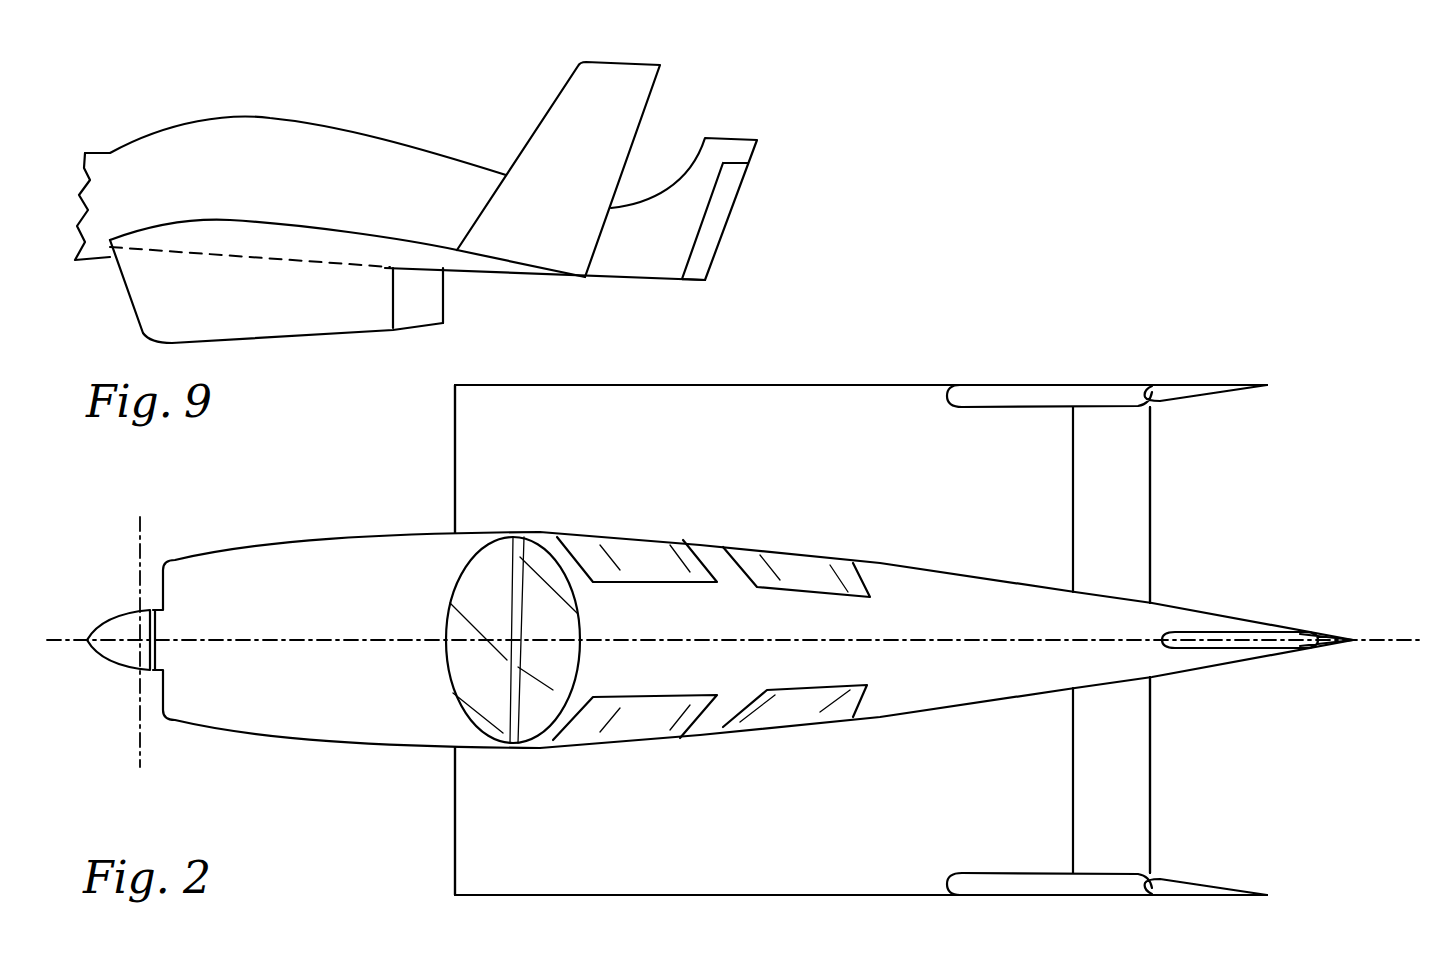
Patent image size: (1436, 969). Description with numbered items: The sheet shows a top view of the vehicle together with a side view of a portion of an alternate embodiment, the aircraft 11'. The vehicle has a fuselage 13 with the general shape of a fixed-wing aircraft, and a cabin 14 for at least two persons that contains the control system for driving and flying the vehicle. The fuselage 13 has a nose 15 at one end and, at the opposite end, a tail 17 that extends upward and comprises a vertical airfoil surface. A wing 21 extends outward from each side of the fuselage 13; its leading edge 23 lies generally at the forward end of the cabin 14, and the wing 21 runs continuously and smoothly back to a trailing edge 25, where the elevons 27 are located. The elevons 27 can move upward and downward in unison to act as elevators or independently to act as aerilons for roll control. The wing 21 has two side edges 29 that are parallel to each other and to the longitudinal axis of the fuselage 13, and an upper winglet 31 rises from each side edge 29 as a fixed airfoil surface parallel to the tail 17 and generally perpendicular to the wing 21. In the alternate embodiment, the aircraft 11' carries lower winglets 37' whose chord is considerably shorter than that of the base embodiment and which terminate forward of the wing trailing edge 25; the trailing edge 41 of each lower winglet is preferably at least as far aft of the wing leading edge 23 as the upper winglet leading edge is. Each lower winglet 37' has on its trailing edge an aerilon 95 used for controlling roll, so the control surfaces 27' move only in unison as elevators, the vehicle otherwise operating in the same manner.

In FIG. 9, the aircraft 11' is at (290, 172).
In FIG. 2, the aircraft 11' is at (1257, 482).
In FIG. 2, the fuselage 13 is at (928, 597).
In FIG. 2, the cabin 14 is at (630, 560).
In FIG. 2, the nose 15 is at (163, 563).
In FIG. 2, the tail 17 is at (1297, 633).
In FIG. 2, the wing 21 is at (817, 433).
In FIG. 2, the leading edge 23 is at (453, 860).
In FIG. 2, the trailing edge 25 is at (1150, 757).
In FIG. 2, the elevons 27 is at (1162, 640).
In FIG. 2, the side edges 29 is at (653, 385).
In FIG. 2, the upper winglet 31 is at (1127, 885).
In FIG. 9, the lower winglets 37' is at (276, 313).
In FIG. 9, the trailing edge 41 is at (447, 287).
In FIG. 9, the control surfaces 27' is at (607, 197).
In FIG. 9, the aerilon 95 is at (408, 310).